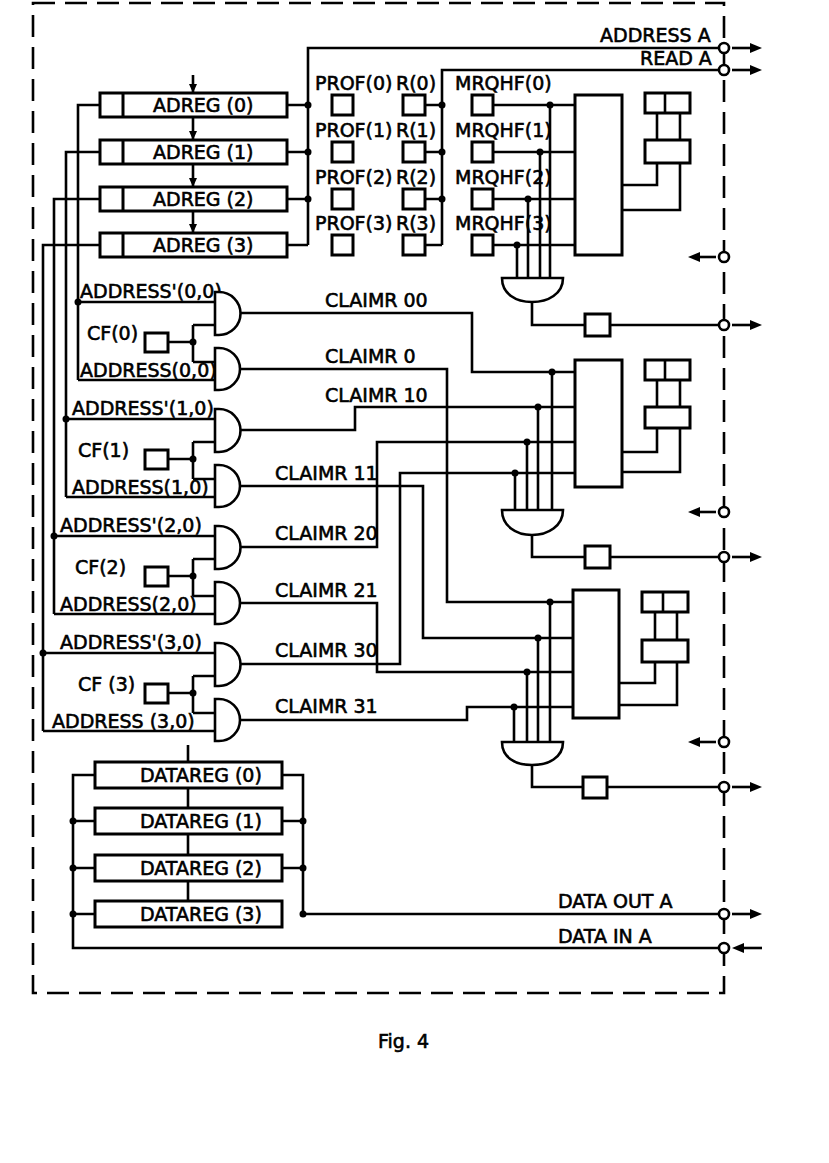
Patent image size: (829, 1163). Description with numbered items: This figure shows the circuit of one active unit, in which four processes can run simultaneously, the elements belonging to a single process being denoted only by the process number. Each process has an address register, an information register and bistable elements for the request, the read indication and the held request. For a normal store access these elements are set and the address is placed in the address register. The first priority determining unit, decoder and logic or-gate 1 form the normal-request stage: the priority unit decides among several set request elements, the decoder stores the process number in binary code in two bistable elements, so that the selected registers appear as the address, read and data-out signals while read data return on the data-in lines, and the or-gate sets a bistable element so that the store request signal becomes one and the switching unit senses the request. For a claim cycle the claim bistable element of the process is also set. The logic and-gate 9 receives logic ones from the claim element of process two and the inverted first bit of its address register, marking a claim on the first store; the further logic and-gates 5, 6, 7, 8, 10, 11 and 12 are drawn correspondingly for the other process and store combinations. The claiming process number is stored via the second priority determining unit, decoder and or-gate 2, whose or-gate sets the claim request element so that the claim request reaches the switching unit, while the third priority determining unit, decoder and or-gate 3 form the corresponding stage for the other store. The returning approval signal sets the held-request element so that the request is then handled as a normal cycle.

The priority determining unit PR1, decoder DEC1 and logic OR-gate OR 1 is at (603, 322).
The priority determining unit PR2, decoder DEC 2 and logic OR-gate OR2 2 is at (570, 572).
The priority/decoder section 3 (PR3, DEC 3, OR 3) 3 is at (637, 706).
The AND gate 5 is at (229, 305).
The AND gate 6 is at (229, 361).
The AND gate 7 is at (229, 422).
The AND gate 8 is at (229, 478).
The logic AND-gate AND 9 is at (229, 539).
The AND gate 10 is at (229, 595).
The AND gate 11 is at (229, 656).
The AND gate 12 is at (229, 712).